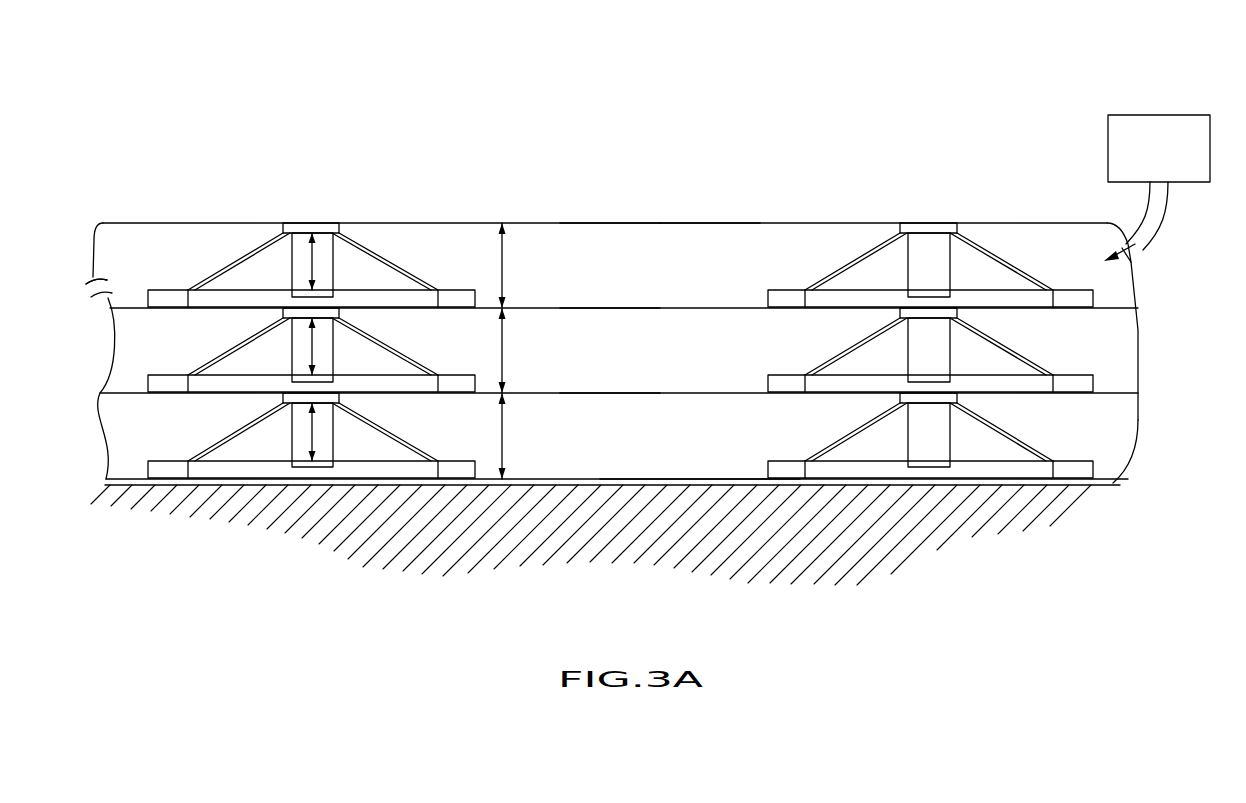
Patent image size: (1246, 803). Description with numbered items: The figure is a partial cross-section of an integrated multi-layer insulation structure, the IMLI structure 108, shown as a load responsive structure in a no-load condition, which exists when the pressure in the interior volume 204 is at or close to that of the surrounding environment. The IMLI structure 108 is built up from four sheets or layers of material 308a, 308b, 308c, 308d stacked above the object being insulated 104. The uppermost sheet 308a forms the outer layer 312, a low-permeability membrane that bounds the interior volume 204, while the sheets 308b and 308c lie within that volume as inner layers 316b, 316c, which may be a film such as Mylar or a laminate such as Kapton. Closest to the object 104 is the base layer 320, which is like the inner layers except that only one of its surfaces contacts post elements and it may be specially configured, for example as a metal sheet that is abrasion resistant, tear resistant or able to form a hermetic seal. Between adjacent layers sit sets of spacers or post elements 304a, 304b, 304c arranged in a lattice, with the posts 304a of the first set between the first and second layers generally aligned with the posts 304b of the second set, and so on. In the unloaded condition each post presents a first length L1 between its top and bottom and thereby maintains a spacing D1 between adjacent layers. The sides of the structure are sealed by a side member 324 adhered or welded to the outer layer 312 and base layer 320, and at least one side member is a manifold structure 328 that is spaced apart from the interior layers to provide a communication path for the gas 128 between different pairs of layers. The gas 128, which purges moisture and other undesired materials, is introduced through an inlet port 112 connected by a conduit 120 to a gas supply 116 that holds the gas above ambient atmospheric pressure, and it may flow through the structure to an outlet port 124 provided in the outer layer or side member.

The IMLI structure 108 is at (405, 203).
The object being insulated 104 is at (897, 545).
The inlet port 112 is at (1136, 258).
The gas supply 116 is at (1196, 115).
The conduit 120 is at (1168, 206).
The outlet port 124 is at (80, 274).
The gas 128 is at (1130, 268).
The interior volume 204 is at (1098, 446).
The post elements of first set of spacers 304a is at (292, 261).
The post elements of second set of spacers 304b is at (292, 346).
The post elements of third set of spacers 304c is at (292, 431).
The first layer of material 308a is at (702, 222).
The second layer of material 308b is at (700, 307).
The third layer of material 308c is at (700, 393).
The fourth layer of material 308d is at (700, 479).
The outer layer 312 is at (624, 222).
The inner layer 316b is at (622, 307).
The inner layer 316c is at (622, 393).
The base layer 320 is at (606, 481).
The side member 324 is at (97, 278).
The manifold structure 328 is at (1138, 418).
The first length L1 is at (283, 447).
The spacing D1 is at (503, 258).